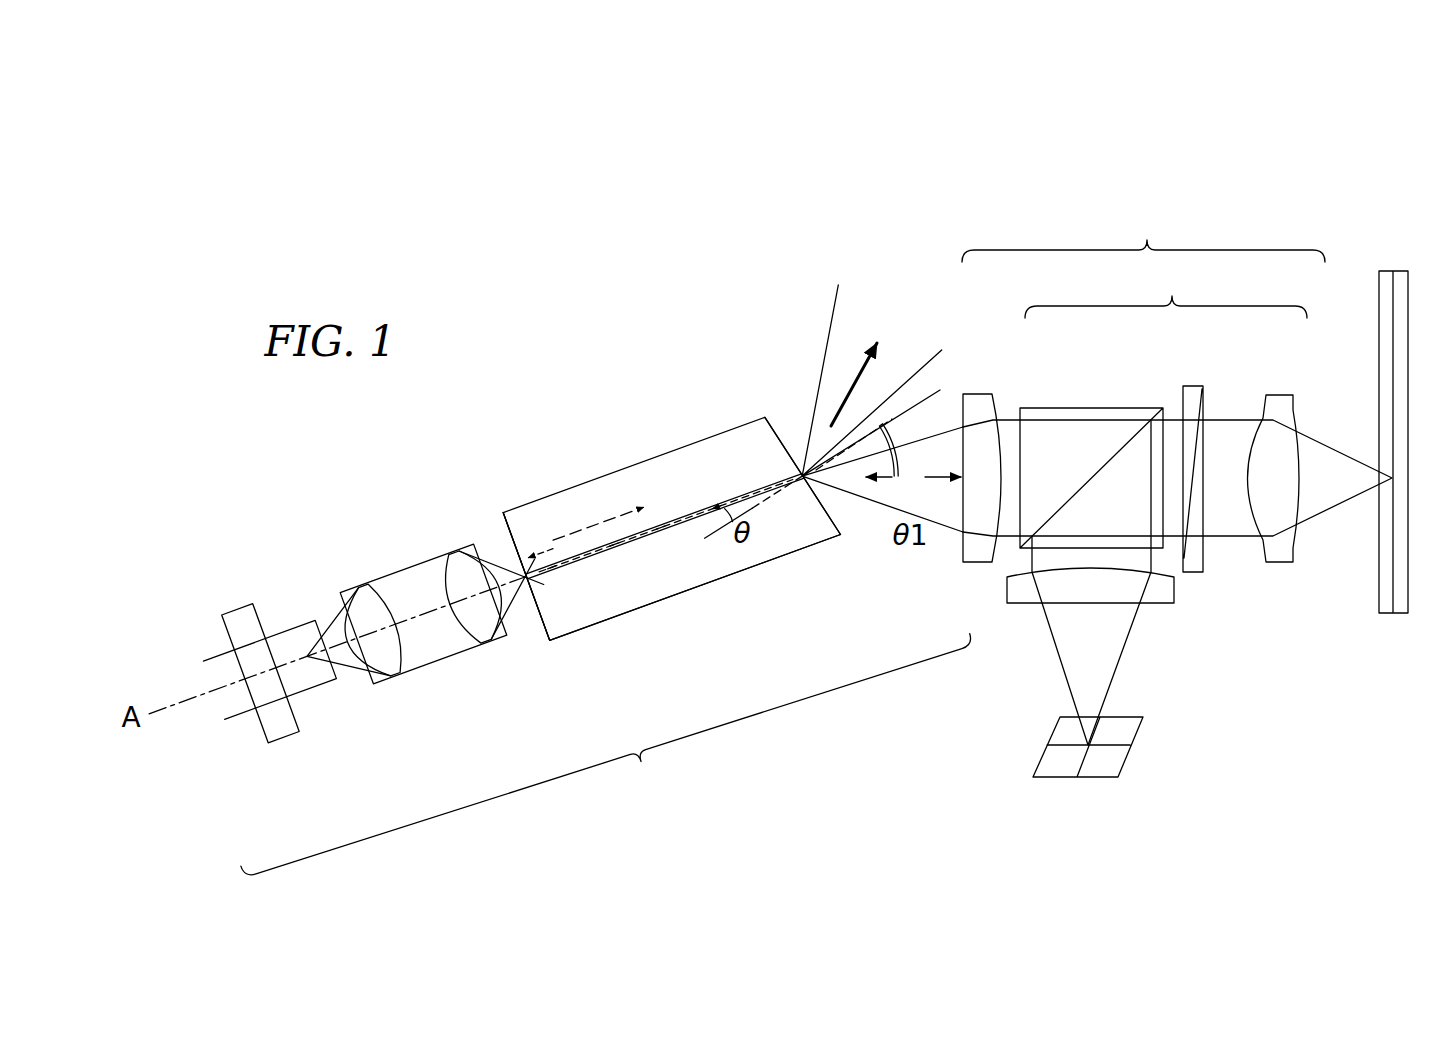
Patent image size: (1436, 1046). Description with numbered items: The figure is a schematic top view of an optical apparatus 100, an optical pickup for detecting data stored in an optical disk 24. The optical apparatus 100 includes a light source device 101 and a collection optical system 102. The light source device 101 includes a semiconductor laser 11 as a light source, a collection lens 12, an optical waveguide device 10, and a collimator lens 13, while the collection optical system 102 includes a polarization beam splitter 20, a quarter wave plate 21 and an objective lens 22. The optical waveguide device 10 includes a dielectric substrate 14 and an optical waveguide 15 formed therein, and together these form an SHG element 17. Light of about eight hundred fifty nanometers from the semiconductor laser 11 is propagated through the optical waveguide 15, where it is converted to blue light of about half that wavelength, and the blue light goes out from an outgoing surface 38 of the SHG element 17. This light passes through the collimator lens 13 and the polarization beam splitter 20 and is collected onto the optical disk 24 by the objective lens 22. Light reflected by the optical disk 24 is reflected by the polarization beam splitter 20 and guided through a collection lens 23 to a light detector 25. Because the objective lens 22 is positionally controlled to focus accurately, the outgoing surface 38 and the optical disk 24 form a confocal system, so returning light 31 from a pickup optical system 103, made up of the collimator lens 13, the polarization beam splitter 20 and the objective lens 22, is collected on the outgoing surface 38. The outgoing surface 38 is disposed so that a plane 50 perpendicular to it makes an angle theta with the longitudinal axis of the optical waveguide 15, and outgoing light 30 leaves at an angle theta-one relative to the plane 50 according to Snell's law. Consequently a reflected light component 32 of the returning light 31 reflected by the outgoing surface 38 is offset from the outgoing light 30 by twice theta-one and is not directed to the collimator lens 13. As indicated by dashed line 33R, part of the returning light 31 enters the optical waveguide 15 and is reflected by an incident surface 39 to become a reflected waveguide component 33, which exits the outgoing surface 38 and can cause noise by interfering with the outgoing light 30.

The optical apparatus 100 is at (1138, 143).
The light source device 101 is at (615, 780).
The collection optical system 102 is at (1166, 289).
The pickup optical system 103 is at (1143, 231).
The optical waveguide device 10 is at (680, 442).
The semiconductor laser 11 is at (288, 737).
The collection lens 12 is at (405, 570).
The collimator lens 13 is at (975, 394).
The dielectric substrate 14 is at (548, 613).
The optical waveguide 15 is at (657, 533).
The SHG element 17 is at (612, 620).
The polarization beam splitter 20 is at (1130, 407).
The 1/4 wave plate 21 is at (1192, 386).
The objective lens 22 is at (1272, 395).
The collection lens 23 is at (1155, 607).
The optical disk 24 is at (1392, 268).
The light detector 25 is at (1098, 780).
The outgoing light 30 is at (927, 480).
The returning light 31 is at (897, 480).
The reflected light component 32 is at (850, 388).
The reflected waveguide component 33 is at (578, 523).
The dashed line 33R is at (562, 572).
The outgoing surface 38 is at (760, 412).
The incident surface 39 is at (503, 527).
The plane 50 is at (772, 498).